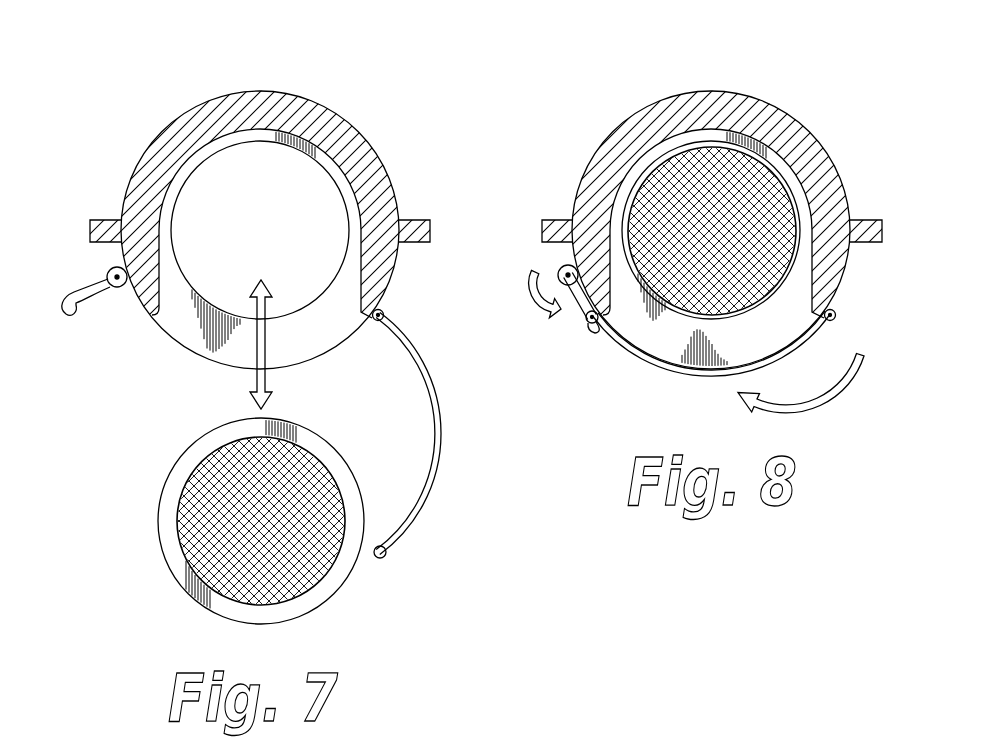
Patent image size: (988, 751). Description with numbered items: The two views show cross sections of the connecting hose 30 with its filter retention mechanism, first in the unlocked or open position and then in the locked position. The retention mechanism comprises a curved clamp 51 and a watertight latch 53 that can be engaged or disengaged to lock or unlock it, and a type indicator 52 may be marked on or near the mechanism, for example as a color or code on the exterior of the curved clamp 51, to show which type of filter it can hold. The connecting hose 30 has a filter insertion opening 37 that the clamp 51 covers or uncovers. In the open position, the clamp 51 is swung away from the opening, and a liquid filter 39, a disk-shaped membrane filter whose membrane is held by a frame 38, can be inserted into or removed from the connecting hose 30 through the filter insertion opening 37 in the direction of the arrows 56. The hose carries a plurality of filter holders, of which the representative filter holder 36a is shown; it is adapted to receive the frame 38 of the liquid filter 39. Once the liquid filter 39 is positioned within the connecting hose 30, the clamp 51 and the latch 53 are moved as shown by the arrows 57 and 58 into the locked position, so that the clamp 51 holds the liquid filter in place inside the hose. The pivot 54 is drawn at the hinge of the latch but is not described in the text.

In FIG. 7, the connecting hose 30 is at (309, 332).
In FIG. 8, the connecting hose 30 is at (639, 269).
In FIG. 7, the filter holder 36a is at (345, 186).
In FIG. 8, the filter holder 36a is at (793, 187).
In FIG. 7, the filter insertion opening 37 is at (335, 370).
In FIG. 8, the filter insertion opening 37 is at (639, 219).
In FIG. 7, the frame 38 is at (323, 587).
In FIG. 7, the liquid filter 39 is at (207, 526).
In FIG. 8, the liquid filter 39 is at (740, 244).
In FIG. 7, the curved clamp 51 is at (440, 438).
In FIG. 8, the curved clamp 51 is at (700, 373).
In FIG. 7, the type indicator 52 is at (395, 312).
In FIG. 8, the type indicator 52 is at (830, 315).
In FIG. 7, the latch 53 is at (72, 313).
In FIG. 8, the latch 53 is at (591, 327).
In FIG. 7, the arm pivot 54 is at (100, 264).
In FIG. 8, the arm pivot 54 is at (568, 275).
In FIG. 7, the arrows 56 is at (255, 381).
In FIG. 8, the arrow 57 is at (840, 398).
In FIG. 8, the arrow 58 is at (530, 273).